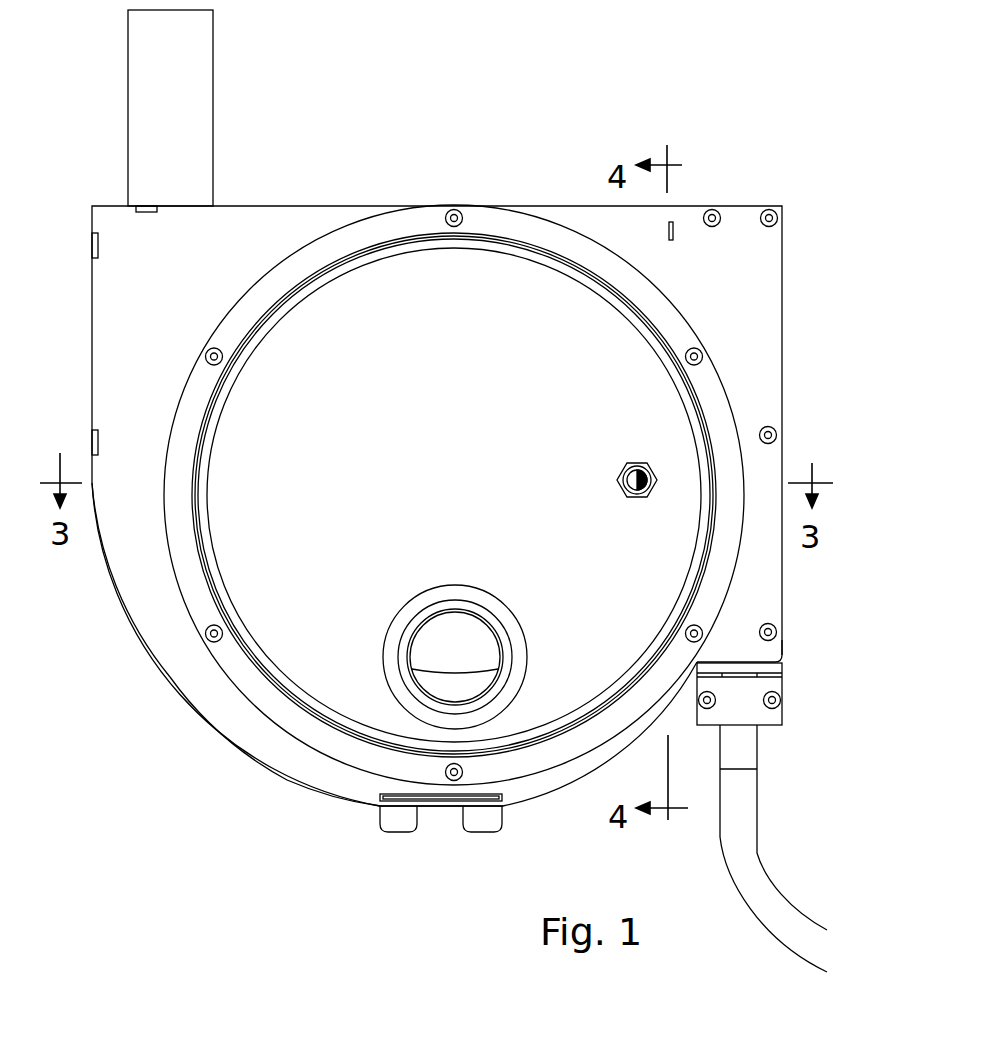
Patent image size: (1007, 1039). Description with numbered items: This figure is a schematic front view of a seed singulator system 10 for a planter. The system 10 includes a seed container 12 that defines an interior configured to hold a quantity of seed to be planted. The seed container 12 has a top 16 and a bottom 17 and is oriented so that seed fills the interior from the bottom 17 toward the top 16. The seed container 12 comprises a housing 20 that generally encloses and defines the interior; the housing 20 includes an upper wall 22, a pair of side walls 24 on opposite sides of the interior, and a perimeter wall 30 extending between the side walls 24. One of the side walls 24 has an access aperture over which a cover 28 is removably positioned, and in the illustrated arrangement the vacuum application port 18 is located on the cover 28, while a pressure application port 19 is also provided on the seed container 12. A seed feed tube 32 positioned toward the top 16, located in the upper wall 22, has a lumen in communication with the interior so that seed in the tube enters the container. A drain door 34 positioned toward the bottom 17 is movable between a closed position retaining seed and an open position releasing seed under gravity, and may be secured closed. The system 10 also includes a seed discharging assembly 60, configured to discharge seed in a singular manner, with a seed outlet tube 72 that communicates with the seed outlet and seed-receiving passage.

The seed singulator system 10 is at (556, 106).
The seed container 12 is at (255, 228).
The top 16 is at (345, 205).
The bottom 17 is at (368, 810).
The vacuum application port 18 is at (407, 659).
The pressure application port 19 is at (630, 495).
The housing 20 is at (150, 604).
The upper wall 22 is at (502, 205).
The side wall 24 is at (195, 672).
The cover 28 is at (620, 378).
The perimeter wall 30 is at (283, 777).
The seed feed tube 32 is at (187, 132).
The drain door 34 is at (440, 808).
The seed discharging assembly 60 is at (796, 252).
The seed outlet tube 72 is at (748, 866).